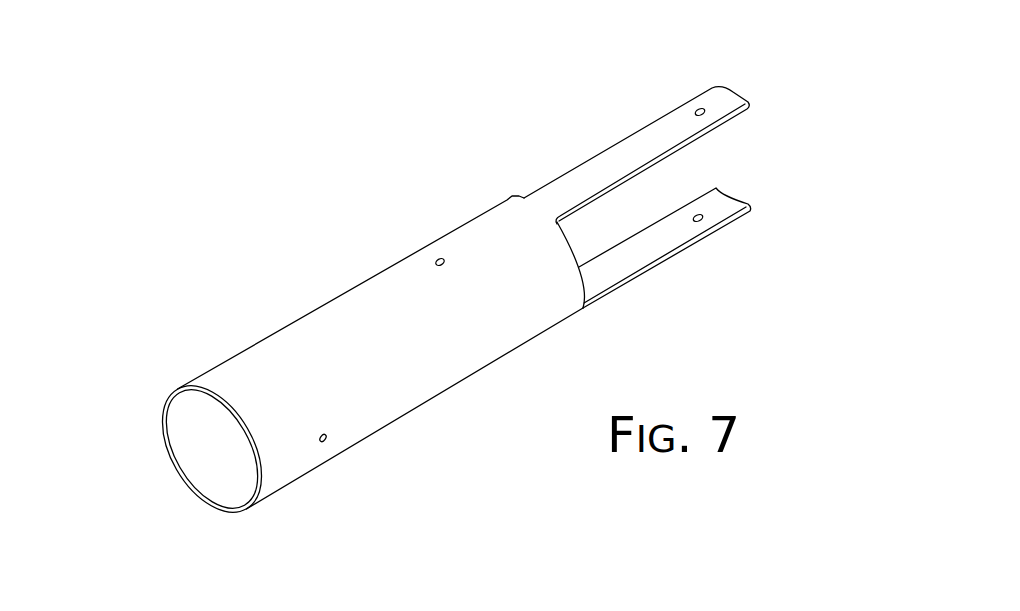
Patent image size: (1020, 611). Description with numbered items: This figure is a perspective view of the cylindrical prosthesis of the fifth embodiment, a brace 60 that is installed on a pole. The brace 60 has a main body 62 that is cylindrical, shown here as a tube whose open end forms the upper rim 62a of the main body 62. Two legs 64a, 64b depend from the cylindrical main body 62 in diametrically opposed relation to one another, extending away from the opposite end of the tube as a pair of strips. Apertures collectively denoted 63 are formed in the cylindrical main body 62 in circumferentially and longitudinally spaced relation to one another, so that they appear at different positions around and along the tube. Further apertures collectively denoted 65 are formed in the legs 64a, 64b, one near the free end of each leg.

The brace 60 is at (287, 292).
The main body 62 is at (450, 348).
The upper rim of main body 62a is at (178, 466).
The apertures 63 is at (436, 259).
The leg 64a is at (610, 167).
The leg 64b is at (648, 250).
The apertures 65 is at (694, 107).